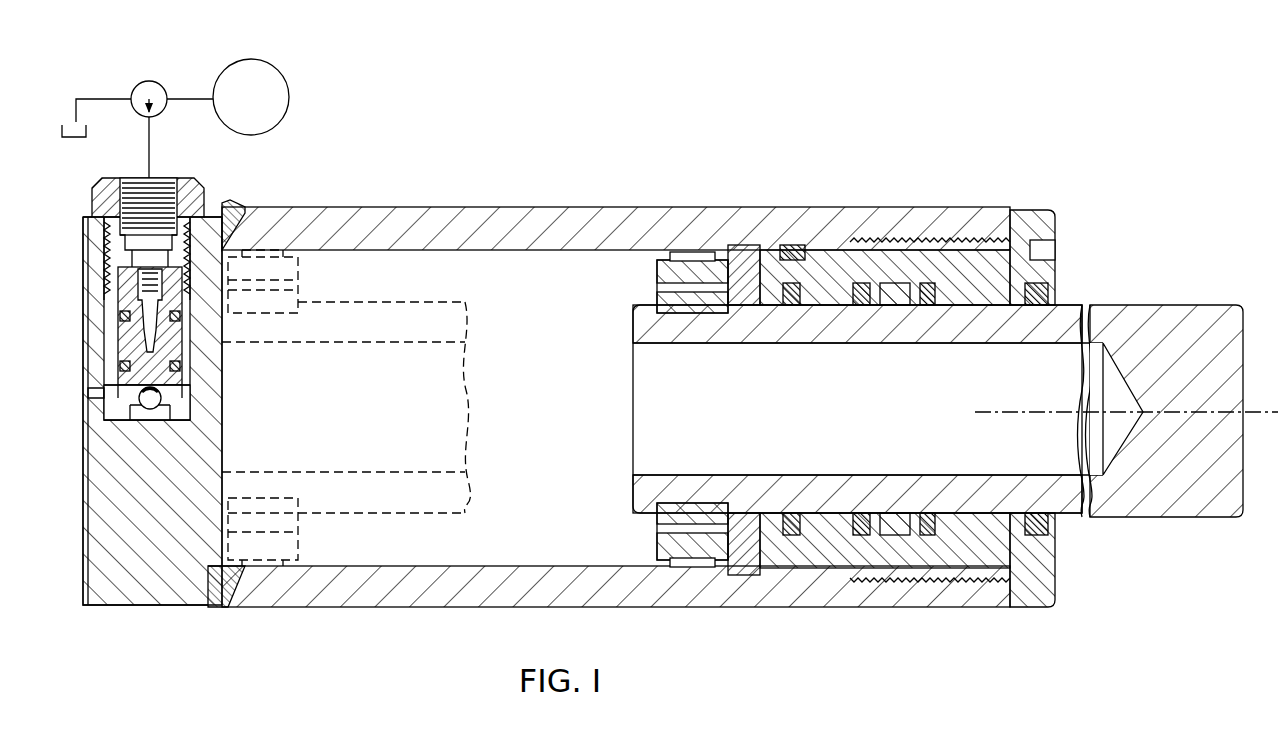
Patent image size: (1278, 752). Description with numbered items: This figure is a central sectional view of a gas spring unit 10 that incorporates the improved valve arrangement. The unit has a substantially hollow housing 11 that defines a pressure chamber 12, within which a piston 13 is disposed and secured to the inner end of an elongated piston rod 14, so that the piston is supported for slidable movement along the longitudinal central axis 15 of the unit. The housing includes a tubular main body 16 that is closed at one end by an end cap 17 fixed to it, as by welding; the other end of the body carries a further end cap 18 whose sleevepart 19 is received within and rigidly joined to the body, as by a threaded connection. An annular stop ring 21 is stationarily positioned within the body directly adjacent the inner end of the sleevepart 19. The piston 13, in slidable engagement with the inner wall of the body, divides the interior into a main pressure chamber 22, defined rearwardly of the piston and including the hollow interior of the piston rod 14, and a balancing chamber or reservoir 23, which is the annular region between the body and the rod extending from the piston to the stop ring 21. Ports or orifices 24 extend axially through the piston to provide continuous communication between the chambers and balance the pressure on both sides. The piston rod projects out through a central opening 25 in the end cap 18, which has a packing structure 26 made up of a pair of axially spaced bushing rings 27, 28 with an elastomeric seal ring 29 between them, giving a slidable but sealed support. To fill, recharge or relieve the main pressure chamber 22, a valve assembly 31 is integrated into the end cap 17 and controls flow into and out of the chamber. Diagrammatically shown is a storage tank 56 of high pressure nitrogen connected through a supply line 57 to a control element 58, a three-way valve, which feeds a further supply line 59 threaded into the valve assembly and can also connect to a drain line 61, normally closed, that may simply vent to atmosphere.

The gas spring unit 10 is at (989, 140).
The housing 11 is at (484, 613).
The pressure chamber 12 is at (545, 453).
The piston 13 is at (690, 551).
The piston rod 14 is at (1165, 496).
The longitudinal central axis 15 is at (1250, 406).
The main body 16 is at (457, 212).
The end cap 17 is at (158, 572).
The end cap 18 is at (1046, 278).
The sleevepart 19 is at (955, 563).
The annular stop ring 21 is at (742, 566).
The main pressure chamber 22 is at (543, 380).
The balancing chamber or reservoir 23 is at (348, 270).
The ports or orifices 24 is at (662, 527).
The central opening 25 is at (1040, 509).
The packing structure 26 is at (863, 507).
The bushing ring 27 is at (912, 527).
The bushing ring 28 is at (779, 522).
The elastomeric seal ring 29 is at (888, 513).
The valve assembly 31 is at (112, 330).
The storage tank 56 is at (268, 80).
The supply line 57 is at (186, 97).
The control element 58 is at (148, 88).
The supply line 59 is at (151, 149).
The drain line 61 is at (102, 96).